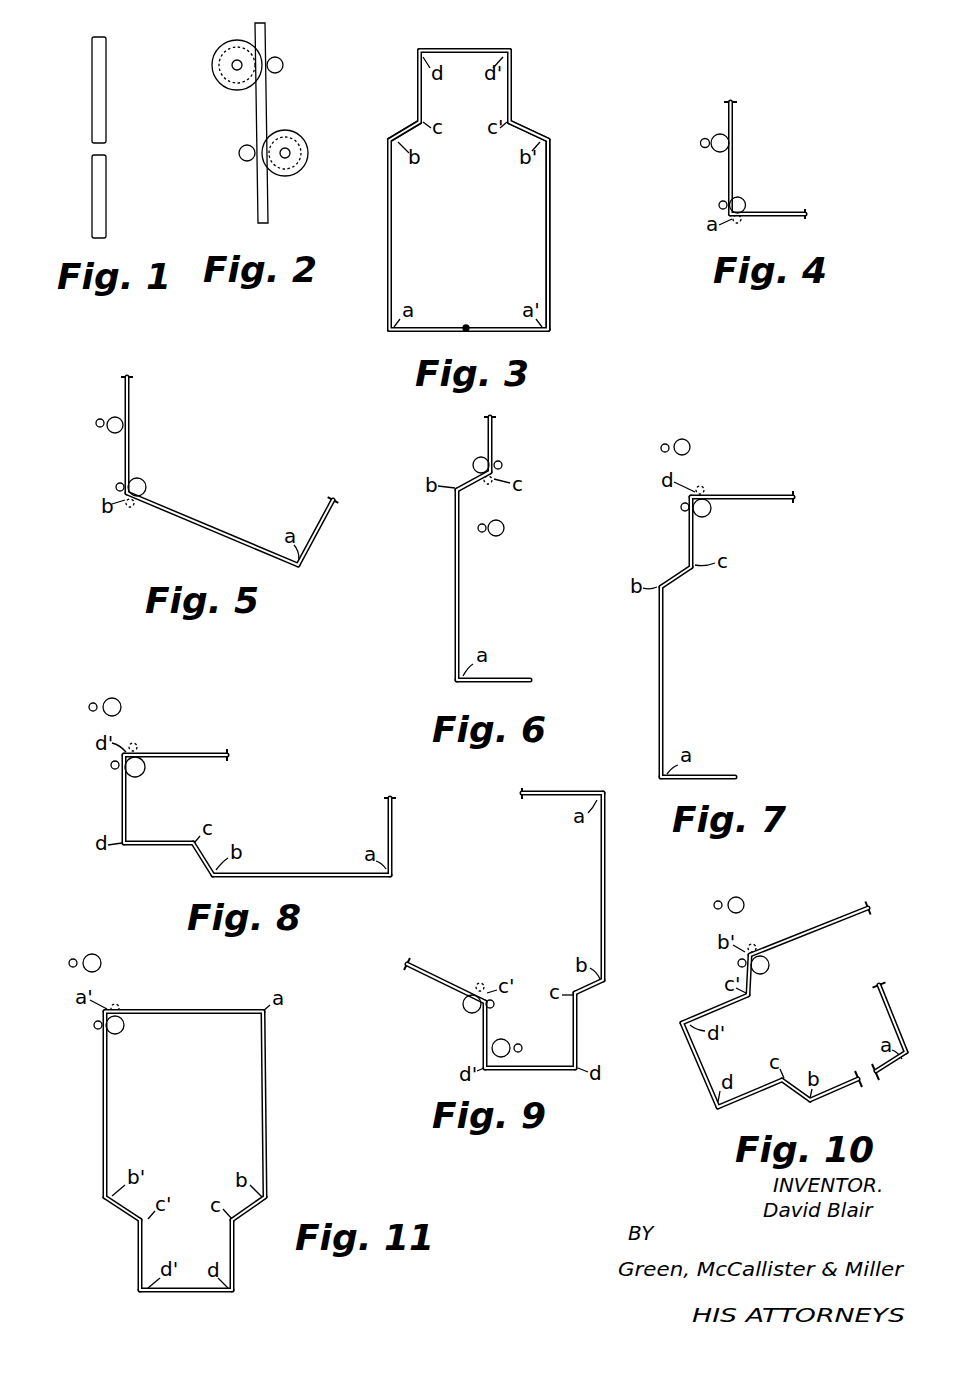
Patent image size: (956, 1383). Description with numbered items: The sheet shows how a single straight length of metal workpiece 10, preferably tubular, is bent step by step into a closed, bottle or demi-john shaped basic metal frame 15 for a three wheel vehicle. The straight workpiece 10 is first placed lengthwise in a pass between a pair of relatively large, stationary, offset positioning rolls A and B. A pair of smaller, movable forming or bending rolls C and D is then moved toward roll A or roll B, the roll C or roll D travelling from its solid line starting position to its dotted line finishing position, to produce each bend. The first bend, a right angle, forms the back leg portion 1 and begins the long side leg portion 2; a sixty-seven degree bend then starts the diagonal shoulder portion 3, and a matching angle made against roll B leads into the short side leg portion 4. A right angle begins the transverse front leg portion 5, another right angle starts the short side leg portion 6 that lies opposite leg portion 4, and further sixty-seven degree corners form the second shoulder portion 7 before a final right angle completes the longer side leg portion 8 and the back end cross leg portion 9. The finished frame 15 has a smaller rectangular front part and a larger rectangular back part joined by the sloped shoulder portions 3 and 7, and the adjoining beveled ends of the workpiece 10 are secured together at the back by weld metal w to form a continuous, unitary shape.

In FIG. 3, the back leg portion 1 is at (436, 325).
In FIG. 4, the back leg portion 1 is at (777, 212).
In FIG. 5, the back leg portion 1 is at (315, 515).
In FIG. 6, the back leg portion 1 is at (506, 678).
In FIG. 7, the back leg portion 1 is at (710, 775).
In FIG. 8, the back leg portion 1 is at (388, 825).
In FIG. 9, the back leg portion 1 is at (540, 800).
In FIG. 10, the back leg portion 1 is at (888, 1010).
In FIG. 11, the back leg portion 1 is at (220, 1008).
In FIG. 3, the side leg portion 2 is at (387, 200).
In FIG. 4, the side leg portion 2 is at (735, 127).
In FIG. 5, the side leg portion 2 is at (218, 526).
In FIG. 6, the side leg portion 2 is at (460, 591).
In FIG. 7, the side leg portion 2 is at (665, 661).
In FIG. 8, the side leg portion 2 is at (317, 872).
In FIG. 9, the side leg portion 2 is at (600, 874).
In FIG. 10, the side leg portion 2 is at (838, 1086).
In FIG. 11, the side leg portion 2 is at (260, 1083).
In FIG. 3, the shoulder portion 3 is at (406, 128).
In FIG. 5, the shoulder portion 3 is at (131, 383).
In FIG. 6, the shoulder portion 3 is at (470, 478).
In FIG. 7, the shoulder portion 3 is at (682, 578).
In FIG. 8, the shoulder portion 3 is at (200, 860).
In FIG. 9, the shoulder portion 3 is at (590, 994).
In FIG. 10, the shoulder portion 3 is at (790, 1098).
In FIG. 11, the shoulder portion 3 is at (248, 1212).
In FIG. 3, the side leg portion 4 is at (417, 80).
In FIG. 6, the side leg portion 4 is at (494, 430).
In FIG. 7, the side leg portion 4 is at (688, 546).
In FIG. 8, the side leg portion 4 is at (160, 846).
In FIG. 9, the side leg portion 4 is at (580, 1034).
In FIG. 10, the side leg portion 4 is at (742, 1098).
In FIG. 11, the side leg portion 4 is at (235, 1257).
In FIG. 3, the front leg portion 5 is at (477, 48).
In FIG. 7, the front leg portion 5 is at (758, 494).
In FIG. 8, the front leg portion 5 is at (121, 804).
In FIG. 9, the front leg portion 5 is at (545, 1071).
In FIG. 10, the front leg portion 5 is at (690, 1061).
In FIG. 11, the front leg portion 5 is at (198, 1292).
In FIG. 3, the side leg portion 6 is at (513, 88).
In FIG. 8, the side leg portion 6 is at (190, 753).
In FIG. 9, the side leg portion 6 is at (480, 1041).
In FIG. 10, the side leg portion 6 is at (730, 1006).
In FIG. 11, the side leg portion 6 is at (137, 1257).
In FIG. 3, the shoulder portion 7 is at (530, 128).
In FIG. 9, the shoulder portion 7 is at (456, 978).
In FIG. 10, the shoulder portion 7 is at (756, 980).
In FIG. 11, the shoulder portion 7 is at (122, 1212).
In FIG. 3, the side leg portion 8 is at (551, 192).
In FIG. 10, the side leg portion 8 is at (830, 919).
In FIG. 11, the side leg portion 8 is at (108, 1083).
In FIG. 3, the back end leg portion 9 is at (497, 325).
In FIG. 11, the back end leg portion 9 is at (160, 1008).
In FIG. 1, the workpiece 10 is at (92, 92).
In FIG. 2, the workpiece 10 is at (258, 205).
In FIG. 3, the basic metal frame 15 is at (387, 248).
In FIG. 2, the fixed roll A is at (302, 135).
In FIG. 4, the fixed roll A is at (743, 198).
In FIG. 5, the fixed roll A is at (147, 480).
In FIG. 6, the fixed roll A is at (505, 527).
In FIG. 7, the fixed roll A is at (710, 516).
In FIG. 8, the fixed roll A is at (143, 775).
In FIG. 9, the fixed roll A is at (507, 1040).
In FIG. 10, the fixed roll A is at (770, 965).
In FIG. 11, the fixed roll A is at (124, 1031).
In FIG. 2, the fixed roll B is at (214, 52).
In FIG. 4, the fixed roll B is at (718, 133).
In FIG. 5, the fixed roll B is at (110, 417).
In FIG. 6, the fixed roll B is at (475, 458).
In FIG. 7, the fixed roll B is at (690, 444).
In FIG. 8, the fixed roll B is at (118, 700).
In FIG. 9, the fixed roll B is at (462, 1005).
In FIG. 10, the fixed roll B is at (744, 906).
In FIG. 11, the fixed roll B is at (99, 956).
In FIG. 2, the bending roll C is at (239, 152).
In FIG. 4, the bending roll C is at (718, 203).
In FIG. 5, the bending roll C is at (116, 486).
In FIG. 6, the bending roll C is at (484, 533).
In FIG. 7, the bending roll C is at (680, 507).
In FIG. 8, the bending roll C is at (111, 765).
In FIG. 9, the bending roll C is at (524, 1046).
In FIG. 10, the bending roll C is at (738, 963).
In FIG. 11, the bending roll C is at (94, 1025).
In FIG. 2, the bending roll D is at (283, 59).
In FIG. 4, the bending roll D is at (700, 145).
In FIG. 5, the bending roll D is at (96, 425).
In FIG. 6, the bending roll D is at (504, 465).
In FIG. 7, the bending roll D is at (660, 446).
In FIG. 8, the bending roll D is at (90, 703).
In FIG. 9, the bending roll D is at (496, 1005).
In FIG. 10, the bending roll D is at (714, 905).
In FIG. 11, the bending roll D is at (71, 958).
In FIG. 3, the weld metal w is at (467, 333).